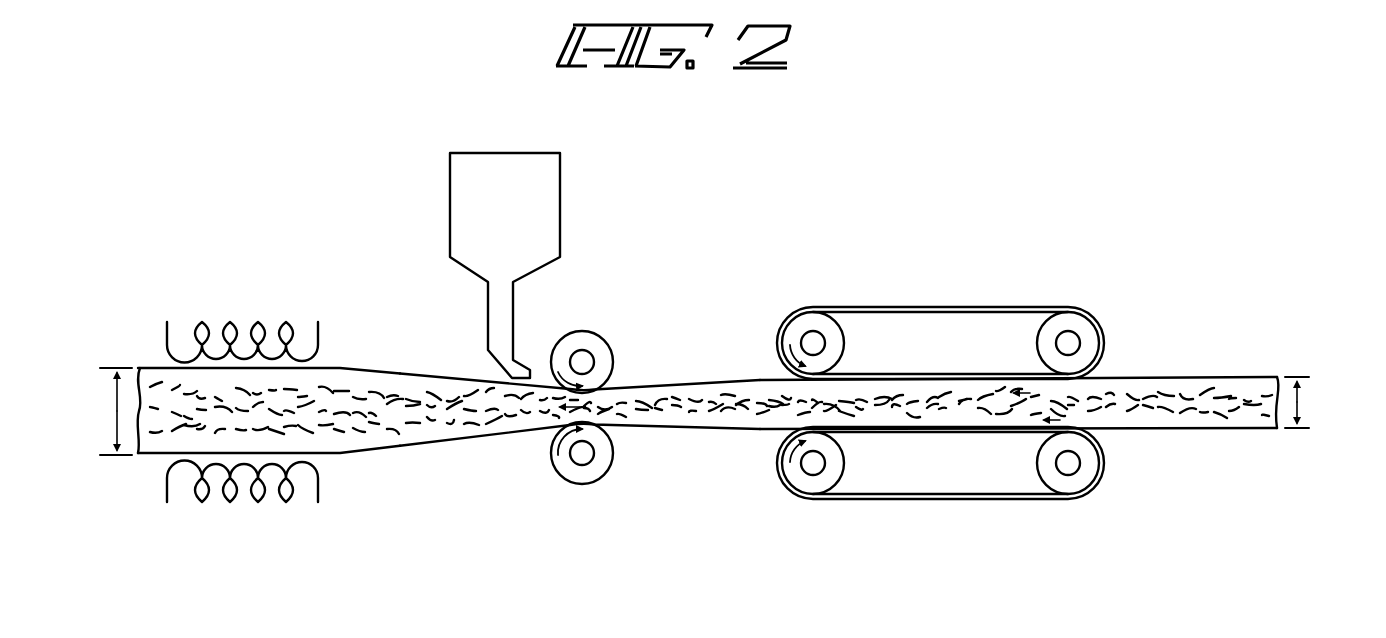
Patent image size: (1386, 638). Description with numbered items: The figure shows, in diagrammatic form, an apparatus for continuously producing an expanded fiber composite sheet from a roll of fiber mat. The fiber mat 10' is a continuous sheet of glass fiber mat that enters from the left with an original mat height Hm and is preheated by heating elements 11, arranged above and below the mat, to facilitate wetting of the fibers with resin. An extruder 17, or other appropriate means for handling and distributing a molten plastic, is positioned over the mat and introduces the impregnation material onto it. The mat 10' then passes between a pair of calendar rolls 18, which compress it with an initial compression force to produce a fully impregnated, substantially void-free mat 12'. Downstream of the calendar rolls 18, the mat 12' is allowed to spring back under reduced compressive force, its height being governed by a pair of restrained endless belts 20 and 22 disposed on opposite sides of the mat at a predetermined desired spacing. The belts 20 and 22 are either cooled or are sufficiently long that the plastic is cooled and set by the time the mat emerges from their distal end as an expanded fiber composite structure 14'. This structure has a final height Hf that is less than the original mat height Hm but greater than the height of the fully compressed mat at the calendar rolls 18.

The fiber mat 10' is at (246, 452).
The heating elements 11 is at (168, 335).
The fully impregnated substantially void-free mat 12' is at (580, 441).
The expanded fiber composite structure 14' is at (1019, 441).
The extruder 17 is at (525, 222).
The calendar rolls 18 is at (597, 332).
The restrained endless belt 20 is at (803, 308).
The restrained endless belt 22 is at (803, 502).
The original mat height Hm is at (83, 411).
The final height Hf is at (1323, 402).